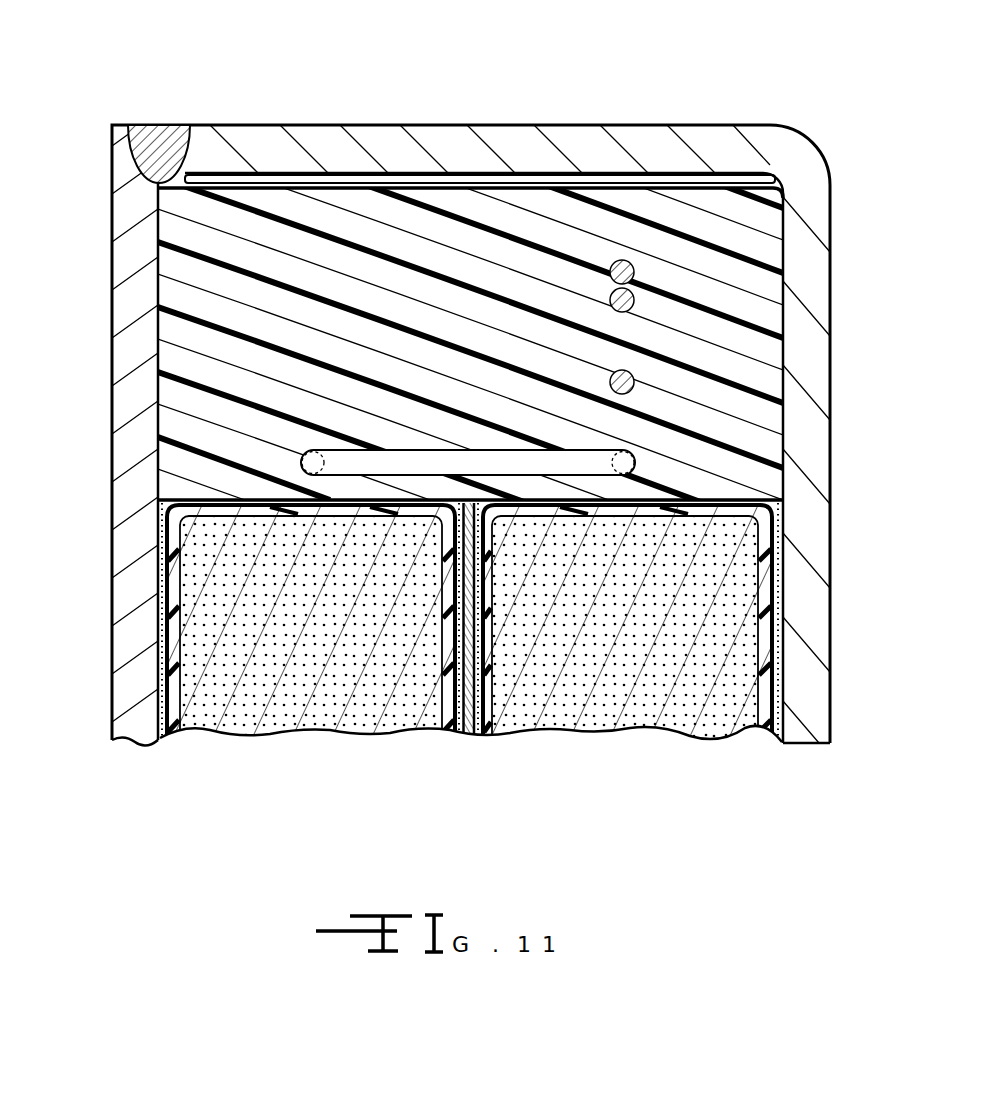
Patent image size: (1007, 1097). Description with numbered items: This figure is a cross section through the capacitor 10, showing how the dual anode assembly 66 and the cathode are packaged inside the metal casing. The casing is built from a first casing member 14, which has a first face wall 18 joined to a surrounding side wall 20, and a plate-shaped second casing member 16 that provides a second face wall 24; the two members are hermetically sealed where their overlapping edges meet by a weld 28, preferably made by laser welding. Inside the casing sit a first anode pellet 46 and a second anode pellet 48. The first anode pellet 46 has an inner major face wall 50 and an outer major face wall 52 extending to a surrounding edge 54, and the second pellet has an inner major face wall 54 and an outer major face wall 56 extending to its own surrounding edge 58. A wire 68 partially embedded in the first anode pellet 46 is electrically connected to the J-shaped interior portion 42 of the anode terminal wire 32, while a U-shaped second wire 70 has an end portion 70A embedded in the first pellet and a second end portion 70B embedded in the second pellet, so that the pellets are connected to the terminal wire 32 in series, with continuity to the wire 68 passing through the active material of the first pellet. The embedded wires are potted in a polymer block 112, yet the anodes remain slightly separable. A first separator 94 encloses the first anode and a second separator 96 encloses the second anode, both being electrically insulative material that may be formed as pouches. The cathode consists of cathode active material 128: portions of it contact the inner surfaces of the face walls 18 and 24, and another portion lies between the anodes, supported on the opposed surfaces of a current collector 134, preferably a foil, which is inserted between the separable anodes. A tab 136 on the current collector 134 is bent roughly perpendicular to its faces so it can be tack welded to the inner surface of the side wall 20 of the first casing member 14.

The capacitor 10 is at (735, 102).
The first casing member 14 is at (800, 750).
The second casing member 16 is at (135, 742).
The first face wall 18 is at (830, 622).
The surrounding side wall 20 is at (528, 125).
The second face wall 24 is at (112, 590).
The weld 28 is at (155, 125).
The anode terminal wire 32 is at (636, 384).
The J-shaped interior portion 42 is at (636, 303).
The first anode pellet 46 is at (605, 748).
The second anode pellet 48 is at (290, 748).
The inner major face wall 50 is at (494, 637).
The outer major face wall 52 is at (753, 637).
The surrounding edge 54 is at (442, 637).
The outer major face wall 56 is at (180, 643).
The surrounding edge 58 is at (245, 518).
The dual anode assembly 66 is at (636, 868).
The wire 68 is at (622, 260).
The second wire 70 is at (438, 458).
The end portion 70A is at (640, 456).
The second end portion 70B is at (300, 453).
The first separator 94 is at (481, 740).
The second separator 96 is at (445, 745).
The polymer block 112 is at (250, 327).
The cathode active material 128 is at (158, 748).
The current collector 134 is at (468, 748).
The tab 136 is at (300, 175).